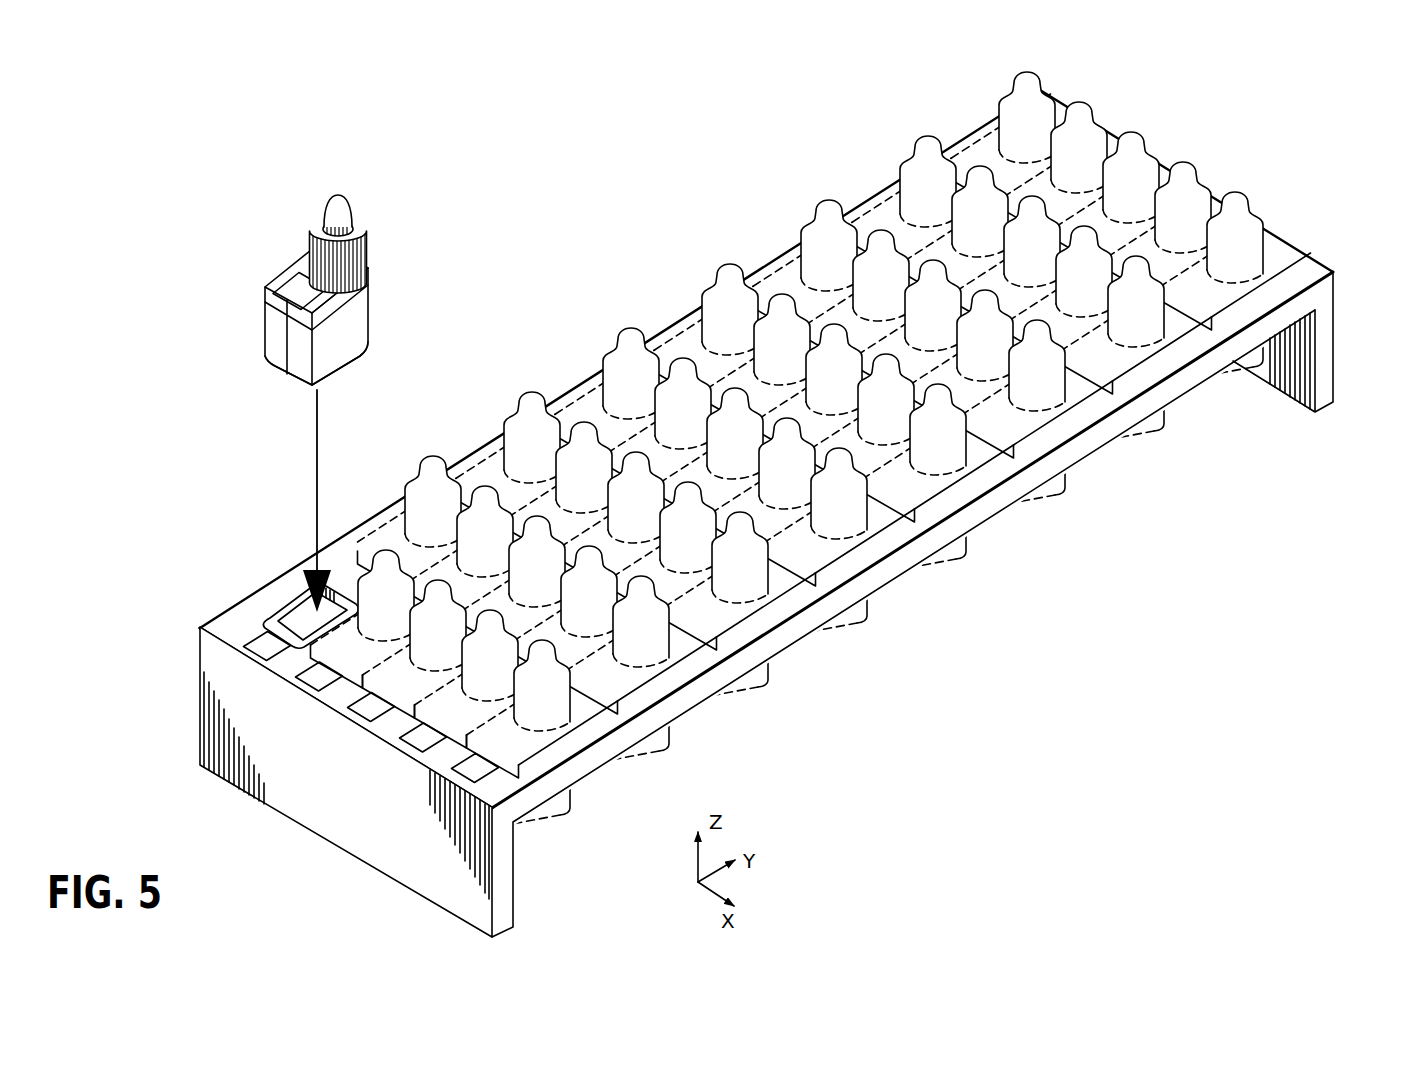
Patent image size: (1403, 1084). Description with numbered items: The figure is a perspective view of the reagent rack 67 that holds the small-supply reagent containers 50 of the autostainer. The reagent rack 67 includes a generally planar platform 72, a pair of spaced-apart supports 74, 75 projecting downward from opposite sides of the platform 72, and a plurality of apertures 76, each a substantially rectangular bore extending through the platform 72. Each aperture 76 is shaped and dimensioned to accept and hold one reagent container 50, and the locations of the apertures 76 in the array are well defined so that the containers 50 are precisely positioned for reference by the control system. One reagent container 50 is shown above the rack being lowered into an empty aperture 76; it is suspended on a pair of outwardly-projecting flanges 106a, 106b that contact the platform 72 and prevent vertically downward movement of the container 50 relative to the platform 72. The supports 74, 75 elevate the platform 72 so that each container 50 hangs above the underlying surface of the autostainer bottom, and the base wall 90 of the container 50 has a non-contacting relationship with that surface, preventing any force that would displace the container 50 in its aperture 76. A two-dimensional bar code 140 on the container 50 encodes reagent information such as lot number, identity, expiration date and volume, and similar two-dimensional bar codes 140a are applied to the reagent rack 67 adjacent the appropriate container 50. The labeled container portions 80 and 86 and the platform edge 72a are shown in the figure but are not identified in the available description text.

The reagent container 50 is at (375, 393).
The container body 80 is at (372, 311).
The dispensing tip 86 is at (308, 237).
The base wall 90 is at (352, 368).
The outwardly-projecting flange 106a is at (351, 312).
The outwardly-projecting flange 106b is at (280, 292).
The two-dimensional bar code 140 is at (298, 280).
The two-dimensional bar code 140a is at (307, 688).
The reagent rack 67 is at (738, 513).
The platform 72 is at (1284, 270).
The edge of top surface 72a is at (241, 618).
The support 74 is at (373, 838).
The support 75 is at (1323, 360).
The aperture 76 is at (288, 612).